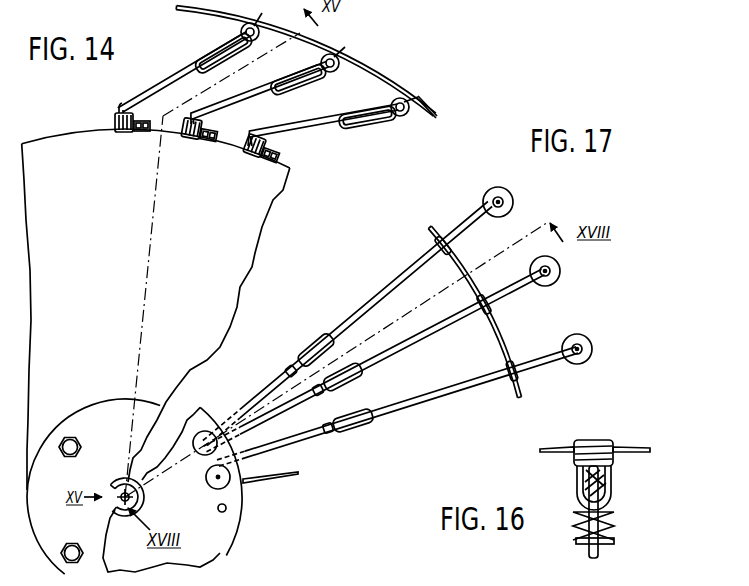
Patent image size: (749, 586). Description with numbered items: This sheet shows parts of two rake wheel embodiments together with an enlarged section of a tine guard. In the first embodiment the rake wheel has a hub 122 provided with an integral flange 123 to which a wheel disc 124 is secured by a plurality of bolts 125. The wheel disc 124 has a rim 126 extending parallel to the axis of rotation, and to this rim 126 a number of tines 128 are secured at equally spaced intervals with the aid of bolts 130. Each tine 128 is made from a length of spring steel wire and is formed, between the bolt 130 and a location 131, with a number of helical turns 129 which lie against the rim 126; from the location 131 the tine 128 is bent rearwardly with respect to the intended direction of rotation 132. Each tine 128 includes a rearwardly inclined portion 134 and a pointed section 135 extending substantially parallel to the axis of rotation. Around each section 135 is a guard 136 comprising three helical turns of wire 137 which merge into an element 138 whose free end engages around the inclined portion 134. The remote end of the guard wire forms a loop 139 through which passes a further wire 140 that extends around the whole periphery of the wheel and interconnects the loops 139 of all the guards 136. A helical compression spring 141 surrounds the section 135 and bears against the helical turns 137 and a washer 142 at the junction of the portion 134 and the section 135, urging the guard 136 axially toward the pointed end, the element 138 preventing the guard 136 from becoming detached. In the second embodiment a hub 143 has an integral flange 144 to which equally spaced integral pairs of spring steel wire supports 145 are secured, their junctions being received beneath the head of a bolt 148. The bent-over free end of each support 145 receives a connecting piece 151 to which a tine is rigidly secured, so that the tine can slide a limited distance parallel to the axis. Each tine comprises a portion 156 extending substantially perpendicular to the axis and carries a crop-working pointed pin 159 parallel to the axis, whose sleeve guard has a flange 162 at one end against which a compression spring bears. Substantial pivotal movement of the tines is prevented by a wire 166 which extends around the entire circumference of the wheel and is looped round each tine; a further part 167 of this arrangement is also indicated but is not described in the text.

In FIG. 14, the hub 122 is at (113, 489).
In FIG. 14, the integral flange 123 is at (120, 404).
In FIG. 14, the wheel disc 124 is at (240, 253).
In FIG. 14, the bolts 125 is at (77, 447).
In FIG. 14, the rim 126 is at (61, 133).
In FIG. 14, the tines 128 is at (273, 124).
In FIG. 14, the helical turns 129 is at (116, 124).
In FIG. 14, the bolt 130 is at (156, 115).
In FIG. 14, the location 131 is at (124, 108).
In FIG. 14, the intended direction of rotation 132 is at (376, 39).
In FIG. 16, the inclined portion 134 is at (578, 525).
In FIG. 16, the pointed section 135 is at (610, 468).
In FIG. 14, the guard 136 is at (335, 71).
In FIG. 16, the guard 136 is at (607, 440).
In FIG. 16, the helical turns of wire 137 is at (575, 446).
In FIG. 14, the element 138 is at (215, 44).
In FIG. 16, the element 138 is at (611, 490).
In FIG. 14, the loop 139 is at (419, 98).
In FIG. 14, the further wire 140 is at (425, 119).
In FIG. 16, the further wire 140 is at (563, 453).
In FIG. 16, the helical compression spring 141 is at (612, 523).
In FIG. 16, the washer 142 is at (614, 543).
In FIG. 14, the hub 143 is at (145, 497).
In FIG. 14, the integral flange 144 is at (236, 521).
In FIG. 17, the spring steel wire supports 145 is at (286, 472).
In FIG. 14, the bolt 148 is at (214, 487).
In FIG. 17, the connecting piece 151 is at (311, 339).
In FIG. 17, the tine portion 156 is at (416, 399).
In FIG. 17, the pointed pin 159 is at (561, 271).
In FIG. 17, the flange 162 is at (484, 205).
In FIG. 17, the wire 166 is at (503, 344).
In FIG. 17, the slider 167 is at (515, 363).